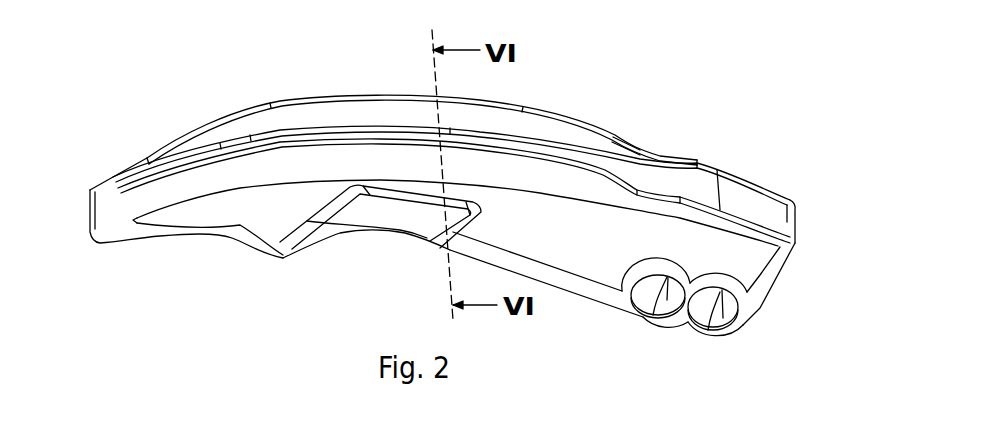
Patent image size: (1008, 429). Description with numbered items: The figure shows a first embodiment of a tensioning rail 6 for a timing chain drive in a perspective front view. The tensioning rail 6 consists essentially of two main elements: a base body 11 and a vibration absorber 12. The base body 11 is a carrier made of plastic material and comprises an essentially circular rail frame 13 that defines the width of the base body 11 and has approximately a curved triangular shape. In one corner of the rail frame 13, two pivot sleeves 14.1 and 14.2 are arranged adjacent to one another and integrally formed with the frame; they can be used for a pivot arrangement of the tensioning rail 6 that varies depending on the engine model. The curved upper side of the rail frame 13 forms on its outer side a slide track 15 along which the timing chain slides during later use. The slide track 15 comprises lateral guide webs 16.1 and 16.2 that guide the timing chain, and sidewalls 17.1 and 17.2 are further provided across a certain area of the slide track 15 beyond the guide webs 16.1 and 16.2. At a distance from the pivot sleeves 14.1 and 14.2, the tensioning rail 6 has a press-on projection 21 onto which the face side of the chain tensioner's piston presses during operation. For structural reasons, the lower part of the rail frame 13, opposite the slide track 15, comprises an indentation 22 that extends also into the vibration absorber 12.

The tensioning rail 6 is at (116, 254).
The base body 11 is at (654, 129).
The vibration absorber 12 is at (261, 221).
The rail frame 13 is at (762, 286).
The pivot sleeve 14.1 is at (657, 295).
The pivot sleeve 14.2 is at (710, 310).
The slide track 15 is at (684, 182).
The guide web 16.1 is at (775, 190).
The guide web 16.2 is at (770, 222).
The sidewall 17.1 is at (253, 103).
The sidewall 17.2 is at (327, 143).
The press-on projection 21 is at (283, 256).
The indentation 22 is at (370, 233).